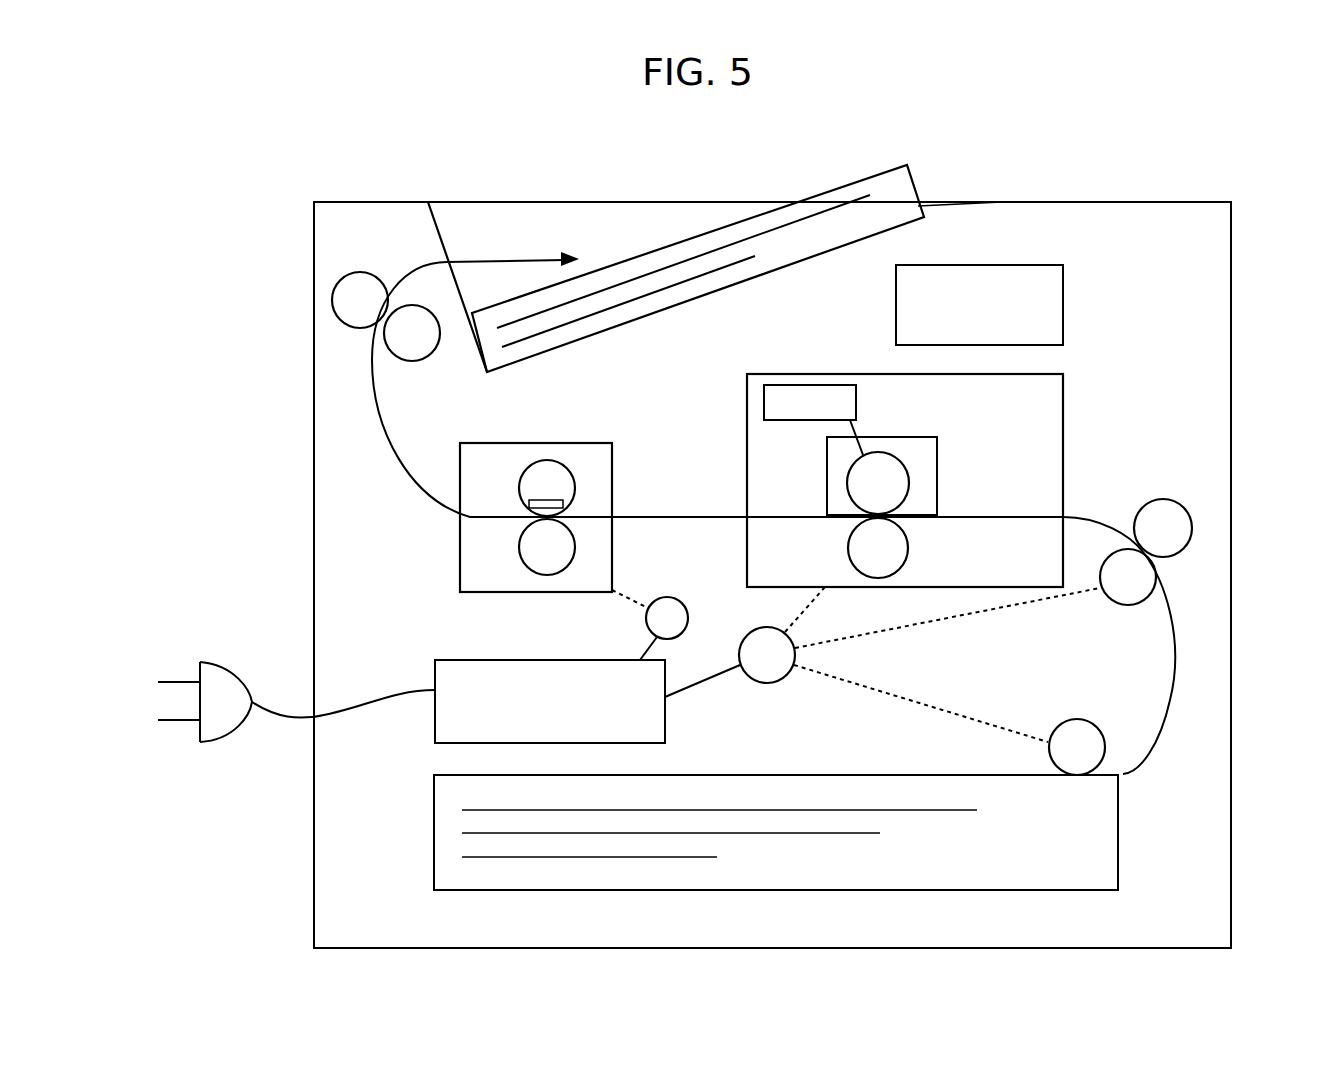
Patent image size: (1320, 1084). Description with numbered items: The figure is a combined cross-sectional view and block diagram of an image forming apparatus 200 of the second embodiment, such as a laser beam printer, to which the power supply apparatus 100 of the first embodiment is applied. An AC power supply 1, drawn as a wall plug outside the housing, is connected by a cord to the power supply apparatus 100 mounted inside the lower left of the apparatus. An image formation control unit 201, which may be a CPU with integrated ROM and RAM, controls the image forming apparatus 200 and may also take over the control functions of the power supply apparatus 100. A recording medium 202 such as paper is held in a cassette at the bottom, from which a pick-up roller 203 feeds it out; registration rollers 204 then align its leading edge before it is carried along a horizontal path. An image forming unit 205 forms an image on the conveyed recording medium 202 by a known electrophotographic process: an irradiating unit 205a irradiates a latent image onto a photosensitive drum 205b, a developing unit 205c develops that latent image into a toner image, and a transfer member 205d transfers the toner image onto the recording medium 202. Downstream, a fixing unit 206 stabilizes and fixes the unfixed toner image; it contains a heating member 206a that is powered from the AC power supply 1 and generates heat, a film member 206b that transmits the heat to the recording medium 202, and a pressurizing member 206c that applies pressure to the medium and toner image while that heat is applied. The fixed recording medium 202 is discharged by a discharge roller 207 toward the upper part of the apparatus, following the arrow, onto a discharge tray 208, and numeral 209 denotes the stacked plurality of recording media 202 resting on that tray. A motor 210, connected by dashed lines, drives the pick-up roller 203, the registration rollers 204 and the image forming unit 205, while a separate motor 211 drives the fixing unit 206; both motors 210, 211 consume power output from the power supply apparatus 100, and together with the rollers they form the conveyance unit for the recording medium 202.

The AC power supply 1 is at (200, 662).
The power supply apparatus 100 is at (435, 660).
The image forming apparatus 200 is at (1232, 202).
The image formation control unit 201 is at (1063, 280).
The recording medium 202 is at (815, 775).
The pick-up roller 203 is at (1072, 720).
The registration rollers 204 is at (1168, 500).
The image forming unit 205 is at (1063, 374).
The irradiating unit 205a is at (810, 385).
The photosensitive drum 205b is at (905, 465).
The developing unit 205c is at (937, 457).
The transfer member 205d is at (907, 538).
The fixing unit 206 is at (612, 443).
The heating member 206a is at (555, 500).
The film member 206b is at (540, 462).
The pressurizing member 206c is at (553, 575).
The discharge roller 207 is at (333, 287).
The discharge tray 208 is at (447, 243).
The stacked recording media 209 is at (907, 165).
The motor 210 is at (775, 683).
The motor 211 is at (667, 597).